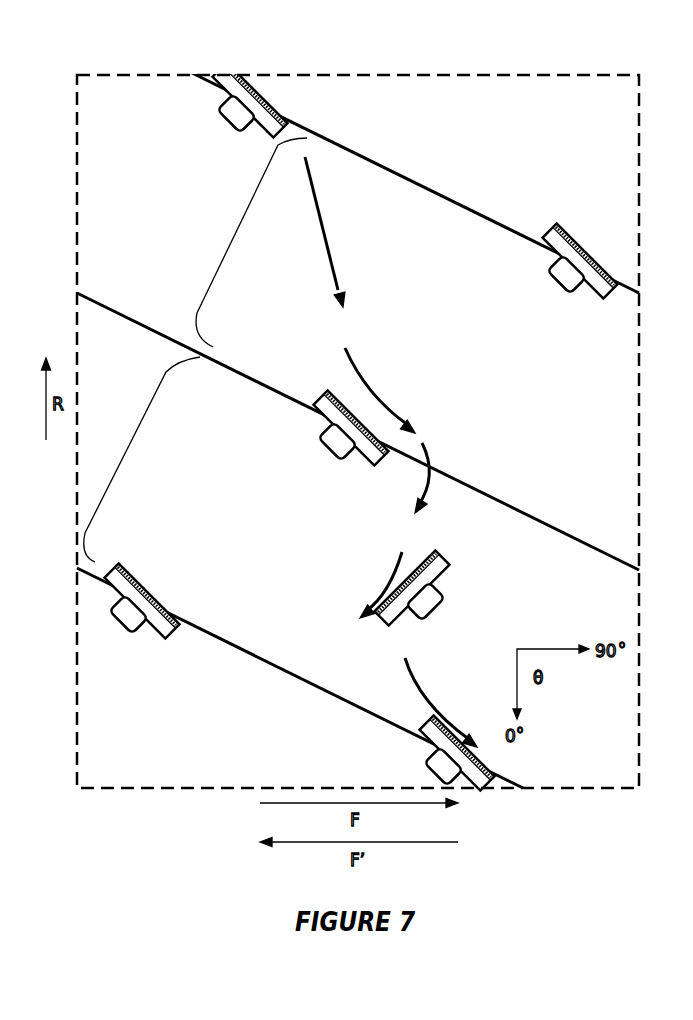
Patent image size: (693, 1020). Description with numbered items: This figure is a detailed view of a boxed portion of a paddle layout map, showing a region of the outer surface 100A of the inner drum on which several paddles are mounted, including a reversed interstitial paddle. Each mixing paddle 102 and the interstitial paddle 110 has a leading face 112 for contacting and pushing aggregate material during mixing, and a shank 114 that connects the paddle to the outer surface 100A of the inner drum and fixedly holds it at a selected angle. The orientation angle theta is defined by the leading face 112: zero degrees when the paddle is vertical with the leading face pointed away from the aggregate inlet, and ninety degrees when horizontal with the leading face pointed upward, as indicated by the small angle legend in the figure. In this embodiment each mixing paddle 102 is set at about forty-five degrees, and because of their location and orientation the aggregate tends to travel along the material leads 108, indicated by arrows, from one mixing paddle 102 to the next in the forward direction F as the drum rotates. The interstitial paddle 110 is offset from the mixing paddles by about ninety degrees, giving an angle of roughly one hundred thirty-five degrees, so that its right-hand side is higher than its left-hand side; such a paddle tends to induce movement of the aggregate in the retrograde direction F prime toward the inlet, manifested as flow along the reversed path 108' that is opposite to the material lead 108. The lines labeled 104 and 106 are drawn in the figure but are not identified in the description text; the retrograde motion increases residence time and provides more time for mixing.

The outer surface of the inner drum 100A is at (627, 121).
The mixing paddle 102 is at (541, 220).
The support rail / guide line 104 is at (422, 190).
The spacing between rails 106 is at (238, 228).
The material lead 108 is at (378, 452).
The reversed path 108' is at (405, 514).
The interstitial paddle 110 is at (449, 550).
The leading face 112 is at (598, 260).
The shank 114 is at (233, 120).